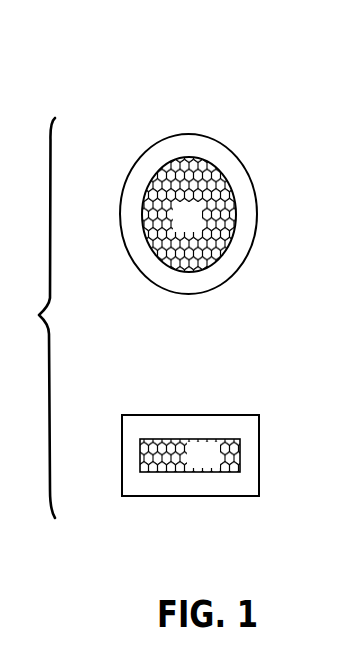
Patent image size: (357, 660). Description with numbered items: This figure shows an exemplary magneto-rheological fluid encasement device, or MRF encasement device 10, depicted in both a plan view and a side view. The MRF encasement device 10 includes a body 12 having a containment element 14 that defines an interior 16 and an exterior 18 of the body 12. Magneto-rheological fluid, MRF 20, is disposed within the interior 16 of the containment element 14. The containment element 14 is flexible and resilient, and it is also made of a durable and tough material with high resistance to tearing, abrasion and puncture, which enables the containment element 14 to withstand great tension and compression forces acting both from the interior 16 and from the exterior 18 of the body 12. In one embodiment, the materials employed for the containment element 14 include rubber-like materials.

The MRF encasement device 10 is at (90, 75).
The body 12 is at (187, 305).
The containment element 14 is at (150, 167).
The interior 16 is at (177, 227).
The exterior 18 is at (100, 202).
The MRF 20 is at (210, 170).